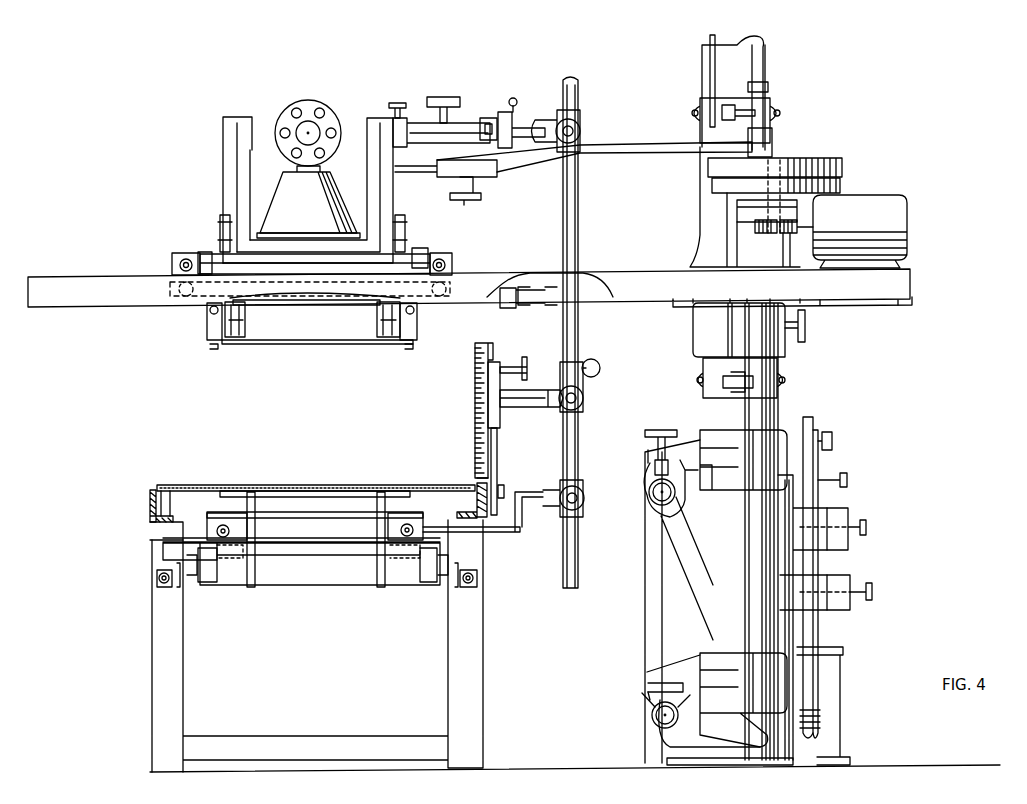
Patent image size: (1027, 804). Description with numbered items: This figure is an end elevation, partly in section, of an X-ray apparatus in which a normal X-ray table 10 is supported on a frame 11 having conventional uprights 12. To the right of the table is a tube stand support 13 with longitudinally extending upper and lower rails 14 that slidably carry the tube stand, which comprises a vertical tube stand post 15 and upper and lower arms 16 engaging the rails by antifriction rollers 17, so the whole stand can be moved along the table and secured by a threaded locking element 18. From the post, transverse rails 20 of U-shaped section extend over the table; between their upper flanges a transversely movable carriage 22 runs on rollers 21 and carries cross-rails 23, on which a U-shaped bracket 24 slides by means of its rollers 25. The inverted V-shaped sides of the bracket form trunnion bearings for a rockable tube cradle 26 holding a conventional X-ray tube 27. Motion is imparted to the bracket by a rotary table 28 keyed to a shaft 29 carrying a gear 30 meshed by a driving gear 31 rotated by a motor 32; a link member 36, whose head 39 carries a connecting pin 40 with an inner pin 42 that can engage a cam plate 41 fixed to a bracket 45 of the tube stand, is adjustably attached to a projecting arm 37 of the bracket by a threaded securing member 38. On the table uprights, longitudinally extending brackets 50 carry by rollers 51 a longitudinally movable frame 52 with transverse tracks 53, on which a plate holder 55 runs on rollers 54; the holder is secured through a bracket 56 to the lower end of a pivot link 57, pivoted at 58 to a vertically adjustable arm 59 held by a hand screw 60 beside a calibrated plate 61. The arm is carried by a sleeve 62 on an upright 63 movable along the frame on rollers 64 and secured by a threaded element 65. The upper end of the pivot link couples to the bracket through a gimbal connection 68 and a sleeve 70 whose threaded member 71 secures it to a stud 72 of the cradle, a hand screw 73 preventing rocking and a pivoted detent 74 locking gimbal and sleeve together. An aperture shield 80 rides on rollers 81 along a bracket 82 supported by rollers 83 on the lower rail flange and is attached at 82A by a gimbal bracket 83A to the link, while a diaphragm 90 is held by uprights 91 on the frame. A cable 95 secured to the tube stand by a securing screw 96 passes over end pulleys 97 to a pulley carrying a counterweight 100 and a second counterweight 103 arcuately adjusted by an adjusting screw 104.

The X-ray table 10 is at (268, 486).
The frame 11 is at (150, 498).
The uprights 12 is at (150, 630).
The tube stand support 13 is at (652, 583).
The upper and lower rails 14 is at (650, 500).
The tube stand post 15 is at (772, 425).
The upper and lower arms 16 is at (700, 440).
The antifriction rollers 17 is at (645, 476).
The threaded locking element 18 is at (658, 432).
The transverse rails 20 is at (109, 300).
The rollers 21 is at (180, 268).
The transversely movable carriage 22 is at (198, 263).
The cross-rails 23 is at (218, 256).
The U-shaped bracket 24 is at (226, 178).
The rollers 25 is at (224, 242).
The tube cradle 26 is at (374, 200).
The X-ray tube 27 is at (290, 118).
The rotary table 28 is at (836, 165).
The shaft 29 is at (790, 205).
The gear 30 is at (763, 233).
The driving gear 31 is at (787, 233).
The motor 32 is at (884, 205).
The link member 36 is at (637, 152).
The projecting arm 37 is at (412, 174).
The threaded securing member 38 is at (474, 198).
The head 39 is at (773, 148).
The connecting pin 40 is at (772, 100).
The cam plate 41 is at (840, 187).
The pin 42 is at (763, 82).
The bracket of the tube stand 45 is at (715, 216).
The longitudinally extending brackets 50 is at (180, 582).
The rollers 51 is at (205, 556).
The longitudinally movable frame 52 is at (334, 572).
The transverse tracks 53 is at (166, 530).
The rollers 54 is at (216, 530).
The plate holder 55 is at (315, 521).
The bracket 56 is at (518, 534).
The pivot link 57 is at (579, 93).
The pivot 58 is at (586, 400).
The vertically adjustable arm 59 is at (526, 402).
The hand screw 60 is at (526, 365).
The calibrated plate 61 is at (476, 382).
The sleeve 62 is at (492, 408).
The upright 63 is at (498, 450).
The rollers 64 is at (480, 474).
The threaded element 65 is at (504, 488).
The gimbal connection 68 is at (581, 134).
The sleeve 70 is at (487, 117).
The threaded member 71 is at (445, 97).
The stud 72 is at (420, 136).
The hand screw 73 is at (400, 100).
The pivoted detent 74 is at (509, 102).
The aperture shield 80 is at (300, 300).
The rollers 81 is at (243, 308).
The longitudinally extending bracket 82 is at (220, 344).
The attachment 82A is at (379, 305).
The rollers 83 is at (208, 310).
The gimbal bracket 83A is at (500, 308).
The diaphragm 90 is at (312, 490).
The uprights 91 is at (256, 580).
The cable or belt 95 is at (814, 430).
The securing screw 96 is at (833, 441).
The end pulleys 97 is at (824, 460).
The counterweight member 100 is at (850, 590).
The second counterweight 103 is at (850, 542).
The adjusting screw 104 is at (848, 490).